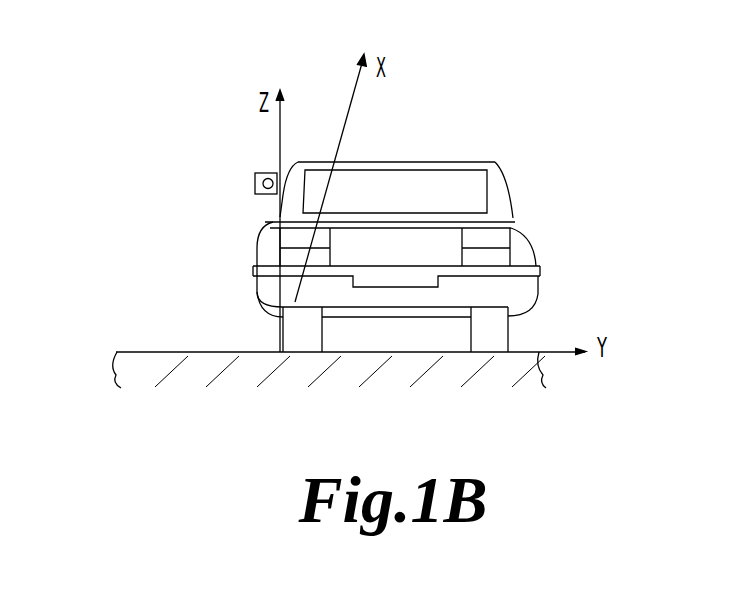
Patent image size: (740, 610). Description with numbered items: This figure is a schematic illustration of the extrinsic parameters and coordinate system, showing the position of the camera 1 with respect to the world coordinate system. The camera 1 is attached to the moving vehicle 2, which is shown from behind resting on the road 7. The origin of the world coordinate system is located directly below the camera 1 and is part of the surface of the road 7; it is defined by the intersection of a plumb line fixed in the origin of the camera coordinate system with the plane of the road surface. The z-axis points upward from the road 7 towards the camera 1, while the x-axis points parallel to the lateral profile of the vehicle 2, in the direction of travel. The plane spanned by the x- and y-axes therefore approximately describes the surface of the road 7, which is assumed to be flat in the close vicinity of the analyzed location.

The camera 1 is at (255, 178).
The vehicle 2 is at (500, 208).
The road 7 is at (167, 356).